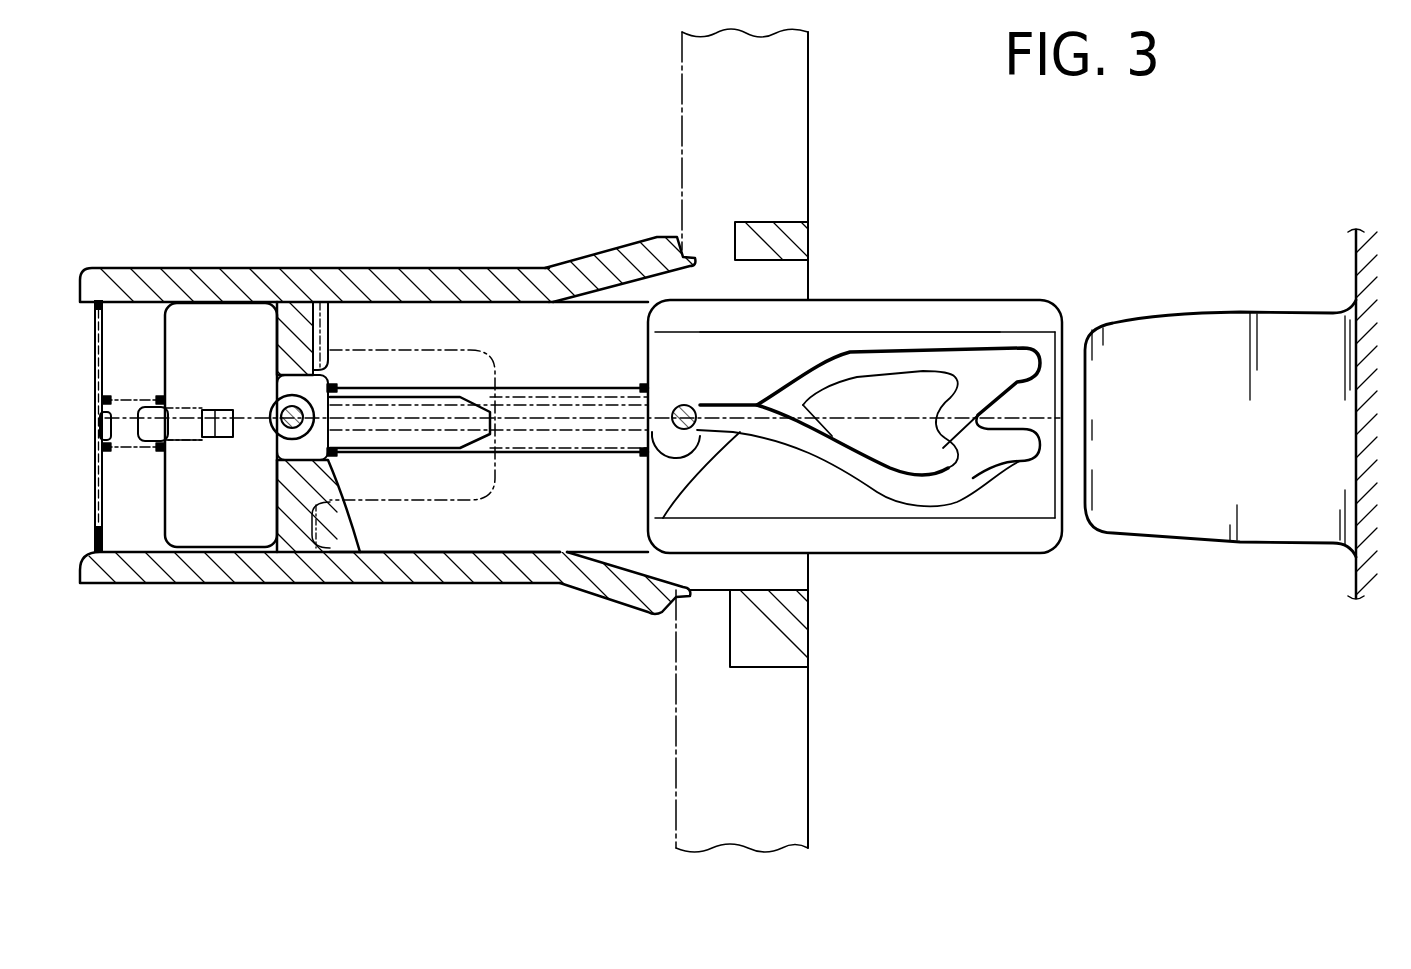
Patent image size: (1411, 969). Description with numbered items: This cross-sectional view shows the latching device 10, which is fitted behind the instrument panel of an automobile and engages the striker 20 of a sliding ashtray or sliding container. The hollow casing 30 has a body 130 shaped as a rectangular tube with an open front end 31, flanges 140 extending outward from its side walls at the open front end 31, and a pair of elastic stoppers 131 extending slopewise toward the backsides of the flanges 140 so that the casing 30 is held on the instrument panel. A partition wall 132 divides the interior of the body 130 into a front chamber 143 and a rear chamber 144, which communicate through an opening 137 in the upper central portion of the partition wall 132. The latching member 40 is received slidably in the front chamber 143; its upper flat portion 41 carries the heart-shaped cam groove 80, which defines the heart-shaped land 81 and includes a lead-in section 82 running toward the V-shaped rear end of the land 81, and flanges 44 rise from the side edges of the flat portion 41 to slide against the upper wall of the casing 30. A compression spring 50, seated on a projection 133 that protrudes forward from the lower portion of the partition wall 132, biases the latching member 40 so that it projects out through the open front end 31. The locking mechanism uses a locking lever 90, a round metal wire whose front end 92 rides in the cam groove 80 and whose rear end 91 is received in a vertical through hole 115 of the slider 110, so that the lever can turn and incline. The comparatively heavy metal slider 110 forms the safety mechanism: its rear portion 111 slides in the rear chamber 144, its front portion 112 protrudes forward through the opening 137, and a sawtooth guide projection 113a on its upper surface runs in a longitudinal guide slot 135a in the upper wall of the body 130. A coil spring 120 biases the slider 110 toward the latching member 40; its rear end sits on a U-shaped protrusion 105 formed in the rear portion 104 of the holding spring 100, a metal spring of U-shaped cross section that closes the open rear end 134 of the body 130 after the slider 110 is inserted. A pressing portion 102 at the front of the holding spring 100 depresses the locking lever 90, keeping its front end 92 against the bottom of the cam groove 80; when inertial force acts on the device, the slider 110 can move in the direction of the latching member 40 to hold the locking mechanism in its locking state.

The latching device 10 is at (166, 175).
The striker 20 is at (1195, 523).
The casing 30 is at (656, 178).
The open front end 31 is at (817, 297).
The latching member 40 is at (1028, 300).
The upper flat portion 41 is at (982, 503).
The flanges 44 is at (883, 315).
The compression spring 50 is at (542, 458).
The heart-shaped cam groove 80 is at (935, 350).
The heart-shaped land 81 is at (907, 452).
The lead-in section 82 is at (728, 415).
The locking lever 90 is at (578, 400).
The rear end of locking lever 91 is at (272, 438).
The front end of locking lever 92 is at (684, 405).
The holding spring 100 is at (95, 327).
The pressing portion 102 is at (463, 352).
The rear portion of holding spring 104 is at (115, 552).
The protrusion 105 is at (103, 423).
The slider 110 is at (255, 226).
The rear portion of slider 111 is at (257, 327).
The front portion of slider 112 is at (320, 320).
The guide projection 113a is at (217, 410).
The vertical through hole 115 is at (273, 406).
The coil spring 120 is at (143, 550).
The body 130 is at (540, 263).
The elastic stopper 131 is at (613, 260).
The partition wall 132 is at (297, 537).
The projection 133 is at (402, 393).
The open rear end 134 is at (117, 318).
The guide slot 135a is at (196, 445).
The opening 137 is at (360, 552).
The flanges 140 is at (735, 222).
The front chamber 143 is at (447, 530).
The rear chamber 144 is at (145, 513).